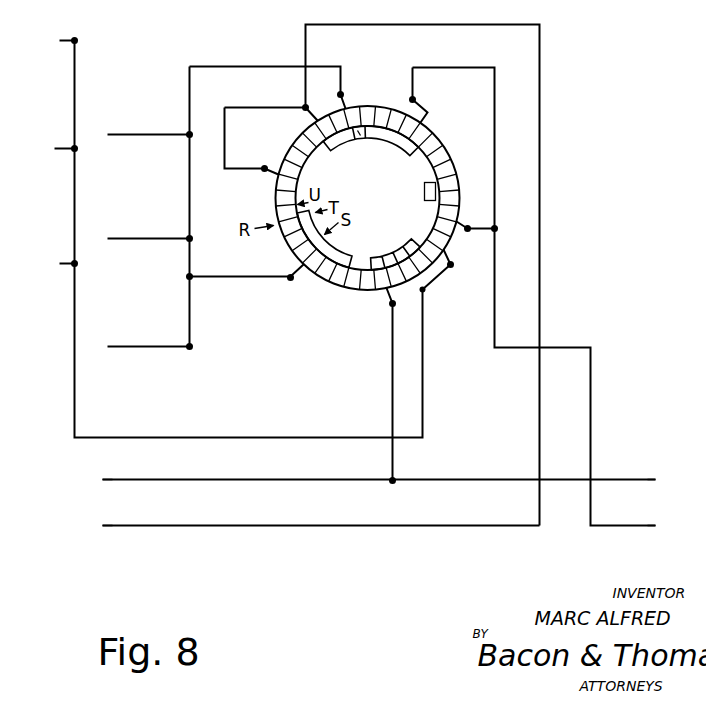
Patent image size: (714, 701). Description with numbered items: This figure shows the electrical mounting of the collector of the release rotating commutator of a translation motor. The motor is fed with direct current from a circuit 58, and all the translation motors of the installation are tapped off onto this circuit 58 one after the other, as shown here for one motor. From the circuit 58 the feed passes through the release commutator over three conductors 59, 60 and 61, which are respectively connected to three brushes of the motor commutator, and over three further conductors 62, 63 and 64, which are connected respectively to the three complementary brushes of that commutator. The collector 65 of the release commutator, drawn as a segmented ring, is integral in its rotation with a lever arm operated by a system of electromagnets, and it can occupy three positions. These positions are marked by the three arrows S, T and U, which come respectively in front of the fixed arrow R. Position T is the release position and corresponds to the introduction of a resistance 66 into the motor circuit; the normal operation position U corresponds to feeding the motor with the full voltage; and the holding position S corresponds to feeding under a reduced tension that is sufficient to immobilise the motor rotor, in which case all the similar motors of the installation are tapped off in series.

The circuit 58 is at (655, 485).
The conductor 59 is at (57, 46).
The conductor 60 is at (57, 155).
The conductor 61 is at (57, 269).
The conductor 62 is at (135, 138).
The conductor 63 is at (135, 243).
The conductor 64 is at (135, 352).
The collector 65 is at (323, 273).
The resistance 66 is at (347, 137).